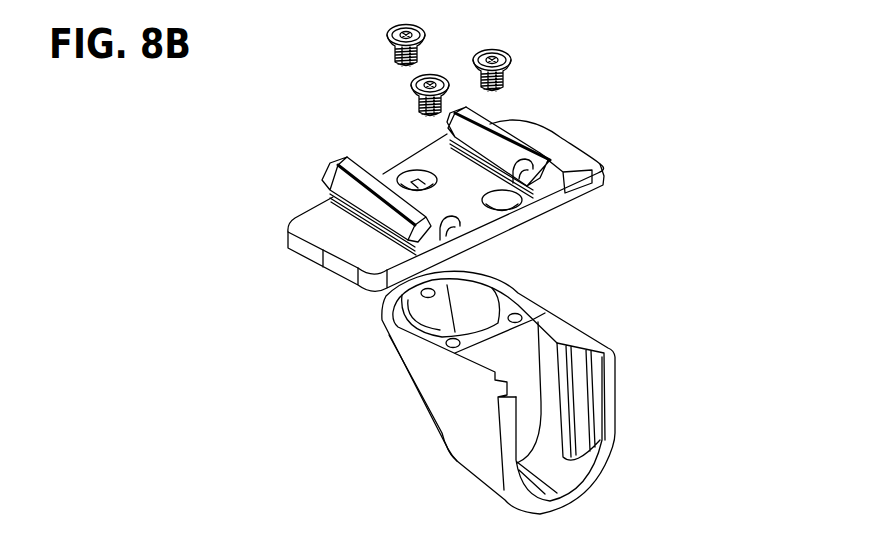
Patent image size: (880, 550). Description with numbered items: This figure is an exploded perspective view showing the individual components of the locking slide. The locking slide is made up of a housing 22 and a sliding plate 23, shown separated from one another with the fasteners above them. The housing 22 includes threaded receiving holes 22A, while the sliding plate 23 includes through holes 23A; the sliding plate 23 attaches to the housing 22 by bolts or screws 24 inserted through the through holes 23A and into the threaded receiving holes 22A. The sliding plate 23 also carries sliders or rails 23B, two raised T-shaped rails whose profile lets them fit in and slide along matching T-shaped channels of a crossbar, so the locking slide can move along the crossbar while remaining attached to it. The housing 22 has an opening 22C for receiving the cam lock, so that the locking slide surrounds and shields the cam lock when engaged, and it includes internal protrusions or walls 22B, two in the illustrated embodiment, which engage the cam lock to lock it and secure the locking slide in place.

The housing 22 is at (445, 408).
The threaded receiving holes 22A is at (520, 315).
The internal protrusion or wall 22B is at (578, 390).
The opening 22C is at (547, 443).
The sliding plate 23 is at (323, 226).
The through holes 23A is at (410, 173).
The sliders or rails 23B is at (347, 187).
The bolts or screws 24 is at (502, 45).